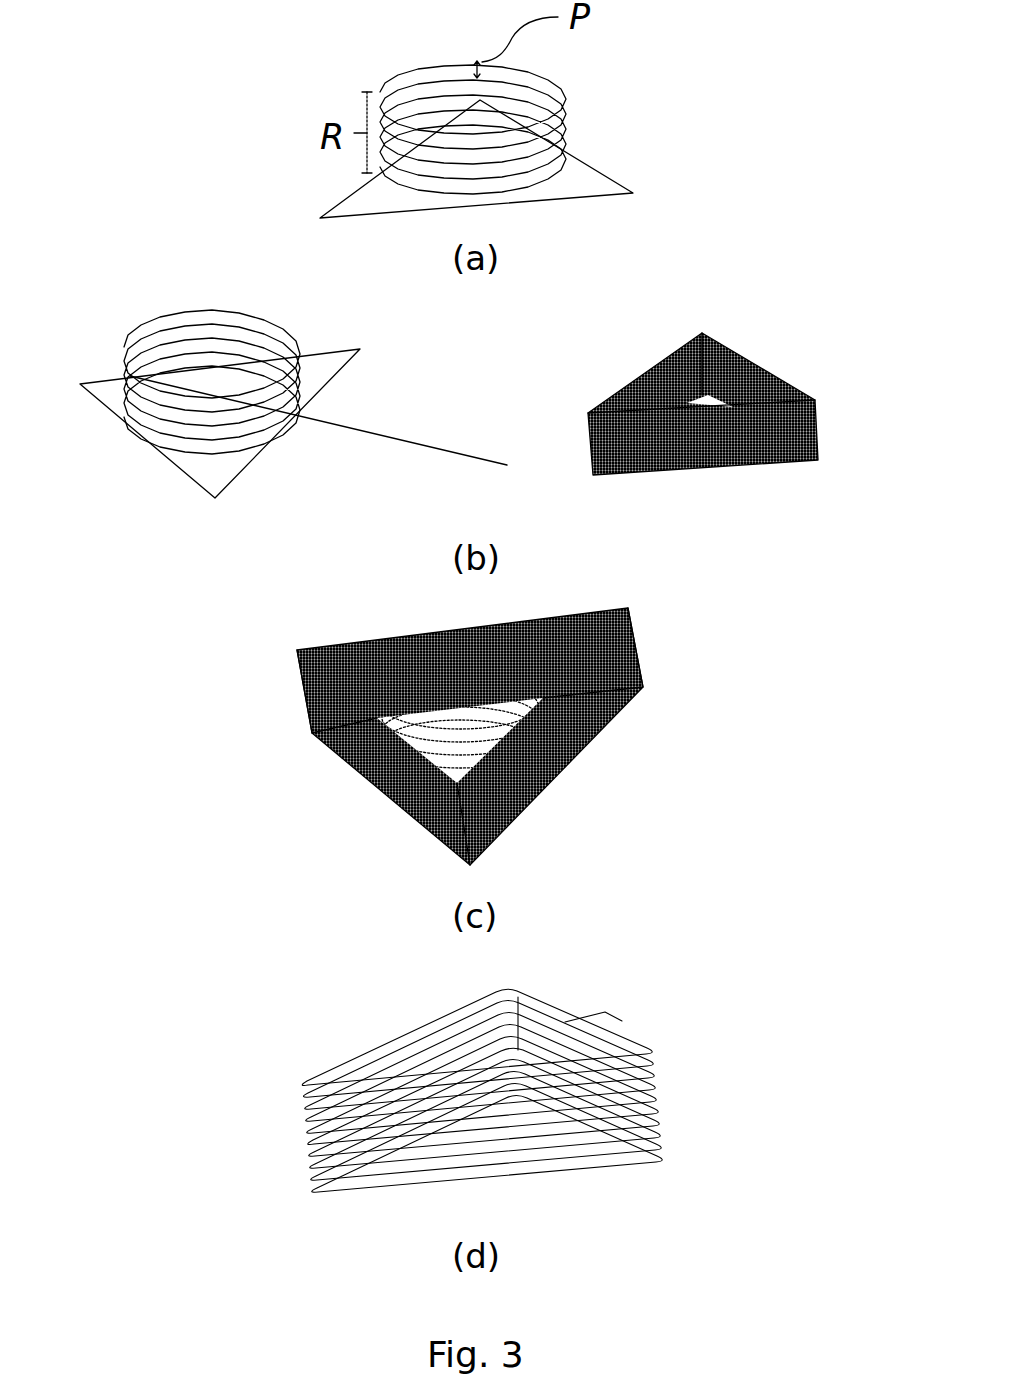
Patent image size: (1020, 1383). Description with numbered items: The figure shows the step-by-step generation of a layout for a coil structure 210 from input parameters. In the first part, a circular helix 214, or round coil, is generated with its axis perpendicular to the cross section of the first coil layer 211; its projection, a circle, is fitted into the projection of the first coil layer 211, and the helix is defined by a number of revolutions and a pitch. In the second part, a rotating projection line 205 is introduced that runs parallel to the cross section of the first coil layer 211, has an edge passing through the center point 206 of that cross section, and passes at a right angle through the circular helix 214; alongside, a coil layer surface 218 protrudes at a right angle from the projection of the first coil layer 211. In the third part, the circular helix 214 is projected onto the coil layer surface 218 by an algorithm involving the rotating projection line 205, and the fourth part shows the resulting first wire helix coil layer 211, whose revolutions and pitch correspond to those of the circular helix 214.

The coil structure 210 is at (243, 54).
The first coil layer 211 is at (340, 197).
The circular helix 214 is at (565, 92).
The rotating projection line 205 is at (367, 437).
The center point 206 is at (217, 408).
The coil layer surface 218 is at (808, 428).